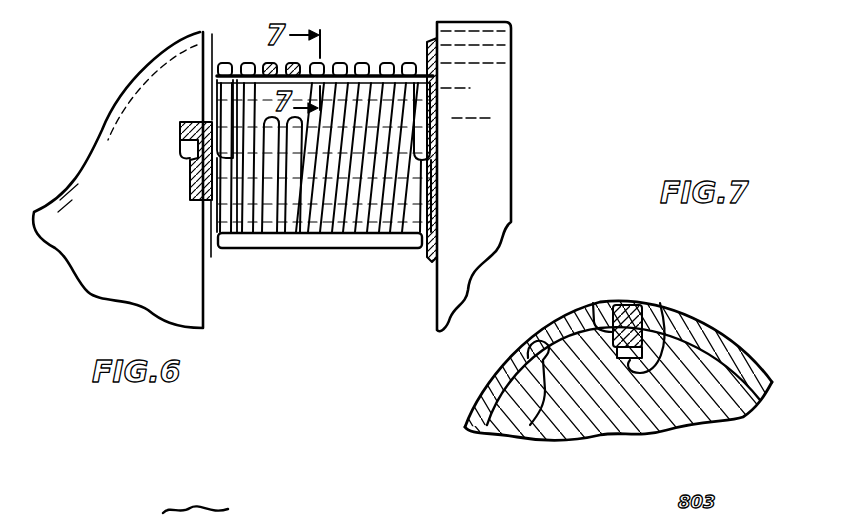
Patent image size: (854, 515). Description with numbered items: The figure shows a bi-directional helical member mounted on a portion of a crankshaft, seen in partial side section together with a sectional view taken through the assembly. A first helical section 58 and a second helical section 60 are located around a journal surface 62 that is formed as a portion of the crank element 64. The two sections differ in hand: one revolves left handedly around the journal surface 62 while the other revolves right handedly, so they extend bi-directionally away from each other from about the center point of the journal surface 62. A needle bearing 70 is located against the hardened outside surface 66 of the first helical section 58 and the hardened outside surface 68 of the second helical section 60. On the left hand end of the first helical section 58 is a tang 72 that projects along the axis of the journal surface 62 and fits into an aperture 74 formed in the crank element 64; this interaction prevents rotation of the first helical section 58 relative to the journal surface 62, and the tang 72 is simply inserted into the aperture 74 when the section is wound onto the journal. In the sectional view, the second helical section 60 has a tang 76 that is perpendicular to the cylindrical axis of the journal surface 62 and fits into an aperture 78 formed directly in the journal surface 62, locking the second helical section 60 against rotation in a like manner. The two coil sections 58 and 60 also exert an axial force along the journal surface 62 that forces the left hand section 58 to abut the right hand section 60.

In FIG. 6, the first helical section 58 is at (263, 212).
In FIG. 6, the second helical section 60 is at (388, 207).
In FIG. 7, the second helical section 60 is at (697, 313).
In FIG. 6, the journal surface 62 is at (263, 94).
In FIG. 7, the journal surface 62 is at (515, 426).
In FIG. 6, the crank element 64 is at (113, 133).
In FIG. 6, the hardened outside surface 66 is at (294, 62).
In FIG. 6, the hardened outside surface 68 is at (360, 64).
In FIG. 7, the hardened outside surface 68 is at (468, 398).
In FIG. 6, the needle bearing 70 is at (291, 248).
In FIG. 6, the tang 72 is at (200, 176).
In FIG. 6, the aperture 74 is at (178, 152).
In FIG. 7, the tang 76 is at (593, 304).
In FIG. 7, the aperture 78 is at (661, 306).